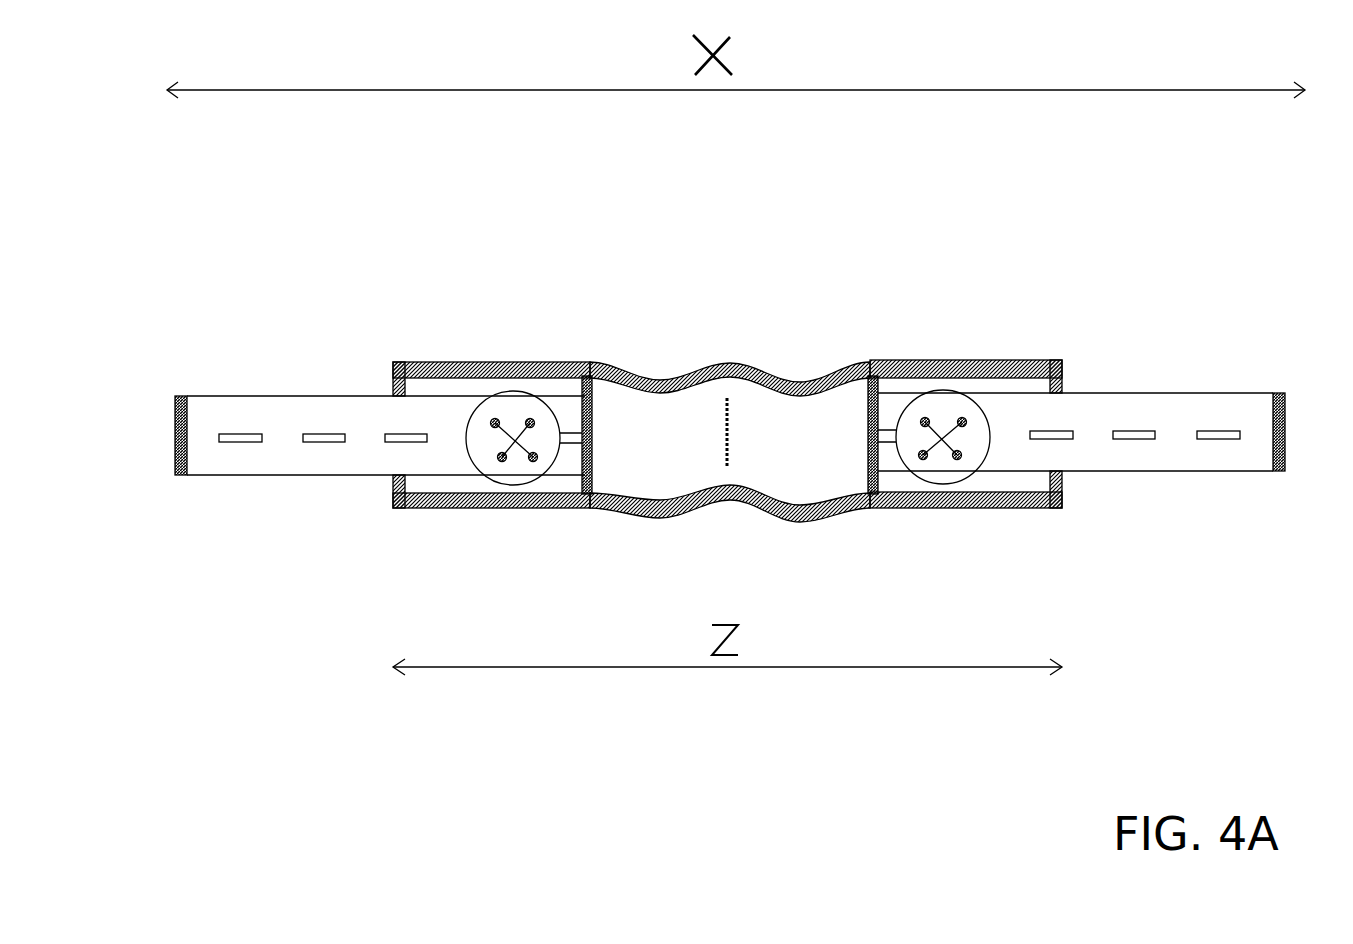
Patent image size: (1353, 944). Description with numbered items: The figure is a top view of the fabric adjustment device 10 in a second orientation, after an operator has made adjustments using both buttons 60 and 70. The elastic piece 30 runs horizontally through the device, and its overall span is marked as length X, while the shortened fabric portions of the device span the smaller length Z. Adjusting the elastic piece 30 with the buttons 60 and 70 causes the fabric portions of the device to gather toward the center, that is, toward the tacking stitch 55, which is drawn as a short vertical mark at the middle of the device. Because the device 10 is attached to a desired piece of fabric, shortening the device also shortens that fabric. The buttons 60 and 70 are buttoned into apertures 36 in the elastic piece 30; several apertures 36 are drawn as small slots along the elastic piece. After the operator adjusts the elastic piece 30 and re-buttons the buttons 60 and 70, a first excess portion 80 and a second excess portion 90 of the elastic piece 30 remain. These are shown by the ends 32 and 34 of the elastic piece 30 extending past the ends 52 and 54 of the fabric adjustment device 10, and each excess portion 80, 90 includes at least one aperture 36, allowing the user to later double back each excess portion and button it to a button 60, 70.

The fabric adjustment device 10 is at (210, 740).
The elastic piece 30 is at (1200, 405).
The end of elastic piece 32 is at (185, 420).
The end of elastic piece 34 is at (1275, 455).
The aperture 36 is at (315, 440).
The end of fabric adjustment device 52 is at (393, 378).
The end of fabric adjustment device 54 is at (1075, 379).
The tacking stitch 55 is at (737, 422).
The button 60 is at (513, 418).
The button 70 is at (938, 415).
The first excess portion 80 is at (180, 592).
The second excess portion 90 is at (1070, 563).